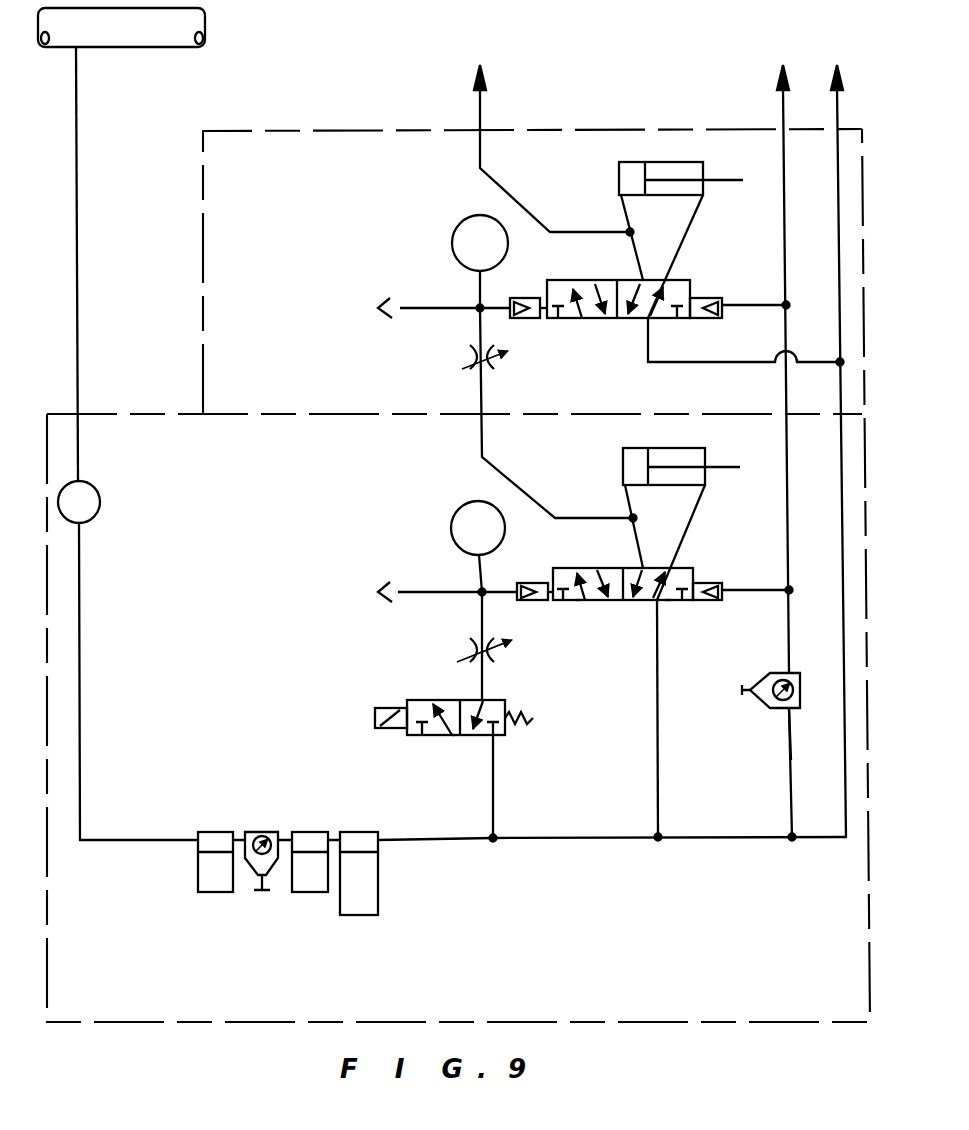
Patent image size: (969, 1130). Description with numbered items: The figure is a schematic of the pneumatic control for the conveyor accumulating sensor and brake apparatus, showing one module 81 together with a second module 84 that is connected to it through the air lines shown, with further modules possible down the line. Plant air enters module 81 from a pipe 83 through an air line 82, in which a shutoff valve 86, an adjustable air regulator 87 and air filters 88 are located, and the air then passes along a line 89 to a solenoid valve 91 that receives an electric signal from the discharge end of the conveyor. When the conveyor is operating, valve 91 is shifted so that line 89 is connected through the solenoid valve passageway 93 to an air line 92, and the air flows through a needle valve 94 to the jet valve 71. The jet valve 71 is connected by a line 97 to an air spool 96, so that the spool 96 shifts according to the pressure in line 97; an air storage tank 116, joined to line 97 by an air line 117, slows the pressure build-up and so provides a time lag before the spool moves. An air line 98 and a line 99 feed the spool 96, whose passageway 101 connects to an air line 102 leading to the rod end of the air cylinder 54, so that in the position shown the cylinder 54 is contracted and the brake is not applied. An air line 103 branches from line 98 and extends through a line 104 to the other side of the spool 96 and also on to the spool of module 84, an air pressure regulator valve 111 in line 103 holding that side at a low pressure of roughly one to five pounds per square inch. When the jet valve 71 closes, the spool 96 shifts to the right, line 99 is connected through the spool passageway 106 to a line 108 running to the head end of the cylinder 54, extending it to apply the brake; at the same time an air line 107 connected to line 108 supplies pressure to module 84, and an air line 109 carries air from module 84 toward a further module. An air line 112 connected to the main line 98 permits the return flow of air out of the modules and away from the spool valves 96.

The air cylinder 54 is at (670, 168).
The jet valve 71 is at (381, 590).
The module 81 is at (713, 1005).
The air line 82 is at (80, 325).
The pipe 83 is at (130, 47).
The second module 84 is at (345, 148).
The shutoff valve 86 is at (96, 509).
The air regulator 87 is at (263, 832).
The air filters 88 is at (345, 905).
The line 89 is at (493, 798).
The solenoid valve 91 is at (455, 736).
The air line 92 is at (487, 699).
The solenoid valve passageway 93 is at (450, 720).
The needle valve 94 is at (471, 646).
The air spool 96 is at (586, 568).
The line 97 is at (506, 590).
The air line 98 is at (600, 840).
The line 99 is at (659, 768).
The passageway 101 is at (668, 602).
The air line 102 is at (688, 530).
The air line 103 is at (791, 757).
The line 104 is at (750, 591).
The spool passageway 106 is at (585, 602).
The air line 107 is at (519, 486).
The line 108 is at (632, 521).
The air line 109 is at (483, 123).
The air pressure regulator valve 111 is at (762, 700).
The air line 112 is at (840, 588).
The air storage tank 116 is at (461, 510).
The air line 117 is at (479, 574).